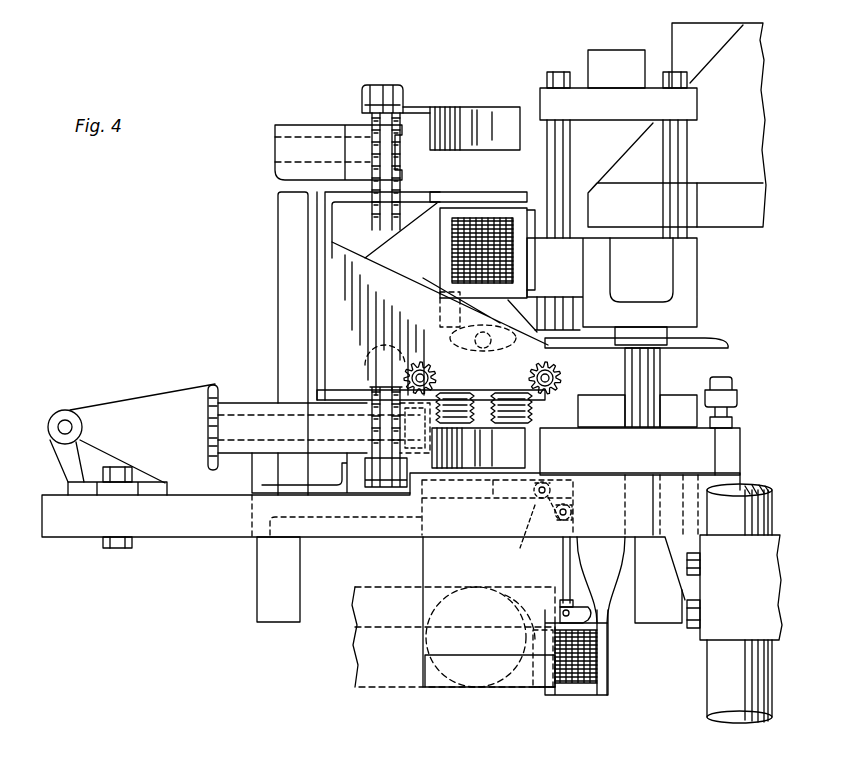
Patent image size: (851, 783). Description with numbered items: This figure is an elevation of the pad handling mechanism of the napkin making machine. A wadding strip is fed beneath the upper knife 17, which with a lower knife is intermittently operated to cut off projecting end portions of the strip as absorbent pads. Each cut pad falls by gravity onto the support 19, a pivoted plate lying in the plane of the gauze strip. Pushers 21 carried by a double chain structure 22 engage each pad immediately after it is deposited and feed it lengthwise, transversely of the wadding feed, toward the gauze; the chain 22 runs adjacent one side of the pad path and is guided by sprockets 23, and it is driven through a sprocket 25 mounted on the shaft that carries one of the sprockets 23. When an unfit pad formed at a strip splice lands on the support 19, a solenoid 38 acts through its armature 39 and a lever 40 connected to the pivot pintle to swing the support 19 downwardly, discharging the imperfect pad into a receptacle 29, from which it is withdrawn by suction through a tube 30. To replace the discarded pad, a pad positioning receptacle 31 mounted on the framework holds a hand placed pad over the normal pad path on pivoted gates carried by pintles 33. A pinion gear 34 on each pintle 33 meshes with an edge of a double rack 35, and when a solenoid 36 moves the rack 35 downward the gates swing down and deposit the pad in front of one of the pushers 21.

The upper knife 17 is at (543, 297).
The support 19 is at (391, 580).
The pusher 21 is at (478, 118).
The double chain structure 22 is at (362, 100).
The sprocket 23 is at (368, 443).
The sprocket 25 is at (208, 438).
The receptacle 29 is at (455, 677).
The tube 30 is at (555, 485).
The pad positioning receptacle 31 is at (383, 283).
The pintle 33 is at (418, 362).
The pinion gear 34 is at (559, 372).
The double rack 35 is at (497, 423).
The solenoid 36 is at (480, 222).
The solenoid 38 is at (590, 668).
The armature 39 is at (590, 615).
The lever 40 is at (543, 515).